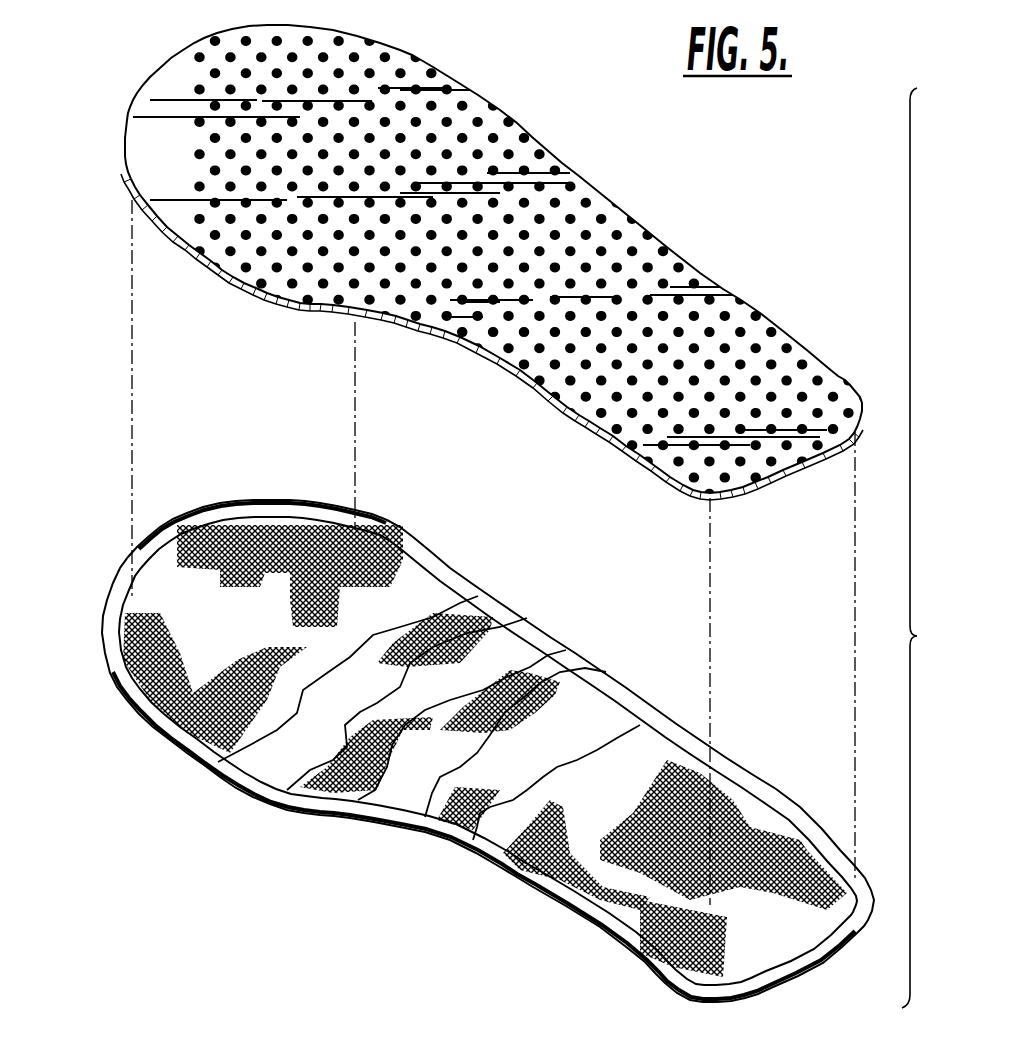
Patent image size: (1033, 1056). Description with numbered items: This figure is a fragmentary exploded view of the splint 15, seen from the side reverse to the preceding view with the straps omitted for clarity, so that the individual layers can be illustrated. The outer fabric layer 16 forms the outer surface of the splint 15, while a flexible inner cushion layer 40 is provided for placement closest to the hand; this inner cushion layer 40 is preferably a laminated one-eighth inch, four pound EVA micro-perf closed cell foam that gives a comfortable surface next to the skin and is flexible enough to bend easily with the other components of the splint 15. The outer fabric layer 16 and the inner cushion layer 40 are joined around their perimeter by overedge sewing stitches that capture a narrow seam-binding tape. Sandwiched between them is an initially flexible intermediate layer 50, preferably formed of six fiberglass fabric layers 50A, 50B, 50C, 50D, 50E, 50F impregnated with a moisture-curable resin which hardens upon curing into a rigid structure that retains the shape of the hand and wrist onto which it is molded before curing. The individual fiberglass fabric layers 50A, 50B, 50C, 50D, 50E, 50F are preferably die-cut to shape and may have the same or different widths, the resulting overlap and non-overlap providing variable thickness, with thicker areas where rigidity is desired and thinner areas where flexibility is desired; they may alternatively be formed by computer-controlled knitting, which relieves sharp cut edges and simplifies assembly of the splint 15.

The splint 15 is at (539, 548).
The outer fabric layer 16 is at (380, 823).
The inner cushion layer 40 is at (653, 247).
The intermediate layer 50 is at (165, 488).
The fiberglass fabric layer 50A is at (392, 595).
The fiberglass fabric layer 50B is at (473, 613).
The fiberglass fabric layer 50C is at (523, 653).
The fiberglass fabric layer 50D is at (580, 700).
The fiberglass fabric layer 50E is at (607, 727).
The fiberglass fabric layer 50F is at (727, 807).